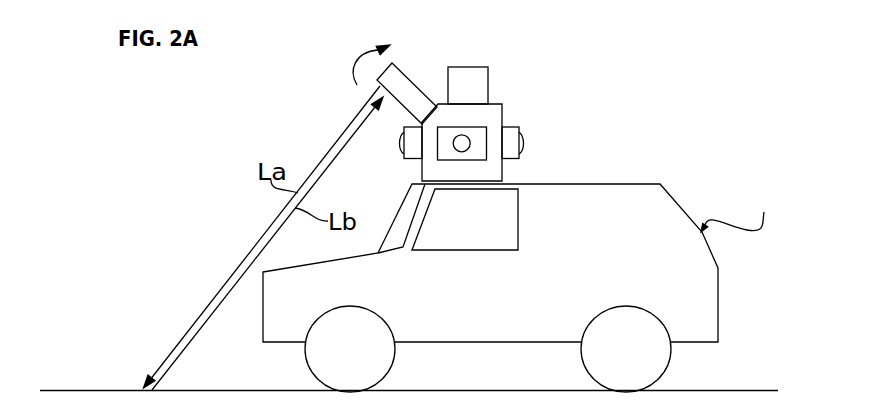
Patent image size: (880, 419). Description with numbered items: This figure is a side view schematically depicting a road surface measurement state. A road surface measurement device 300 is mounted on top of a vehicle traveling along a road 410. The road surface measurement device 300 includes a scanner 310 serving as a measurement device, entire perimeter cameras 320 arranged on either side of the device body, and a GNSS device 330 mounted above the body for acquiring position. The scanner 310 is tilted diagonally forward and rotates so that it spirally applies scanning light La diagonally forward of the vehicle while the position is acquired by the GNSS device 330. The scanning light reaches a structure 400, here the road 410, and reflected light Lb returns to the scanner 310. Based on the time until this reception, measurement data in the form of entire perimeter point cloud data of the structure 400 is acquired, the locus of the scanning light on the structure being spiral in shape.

The road surface measurement device 300 is at (522, 117).
The scanner 310 is at (407, 83).
The entire perimeter cameras 320 is at (473, 127).
The GNSS device 330 is at (489, 86).
The structure 400 is at (409, 345).
The road 410 is at (62, 390).